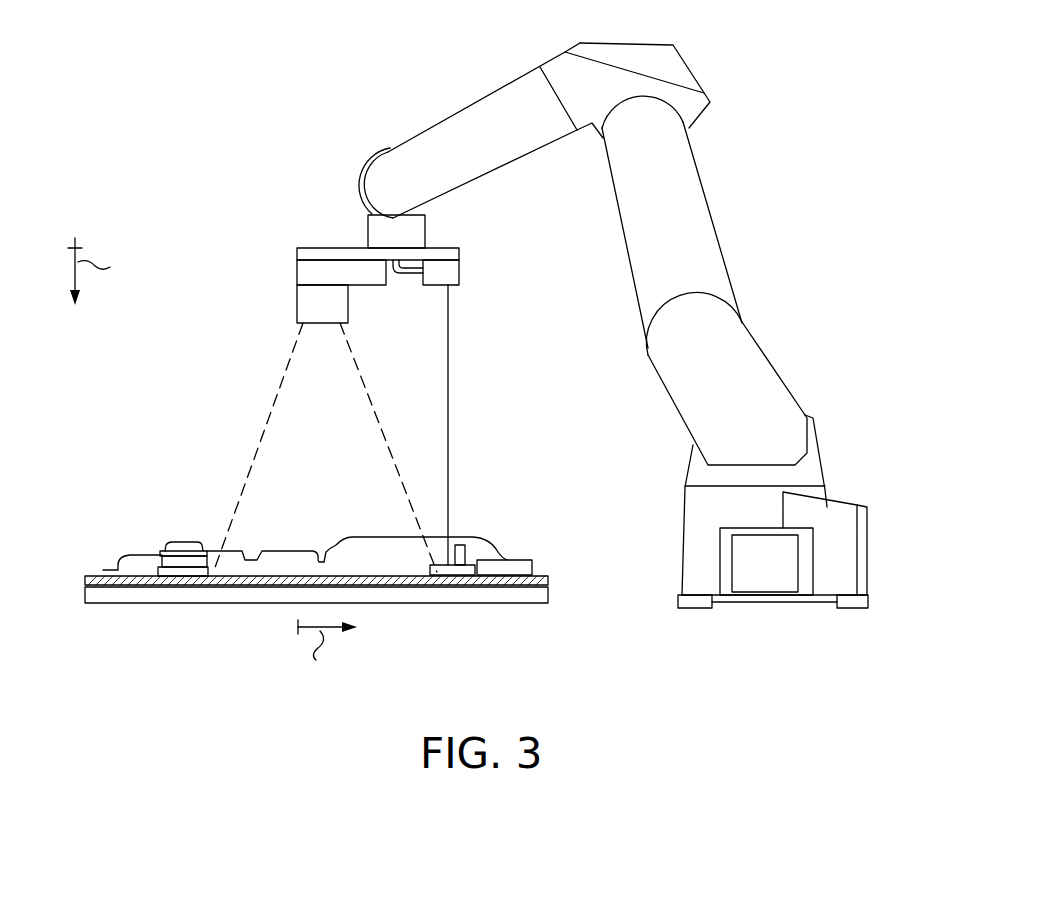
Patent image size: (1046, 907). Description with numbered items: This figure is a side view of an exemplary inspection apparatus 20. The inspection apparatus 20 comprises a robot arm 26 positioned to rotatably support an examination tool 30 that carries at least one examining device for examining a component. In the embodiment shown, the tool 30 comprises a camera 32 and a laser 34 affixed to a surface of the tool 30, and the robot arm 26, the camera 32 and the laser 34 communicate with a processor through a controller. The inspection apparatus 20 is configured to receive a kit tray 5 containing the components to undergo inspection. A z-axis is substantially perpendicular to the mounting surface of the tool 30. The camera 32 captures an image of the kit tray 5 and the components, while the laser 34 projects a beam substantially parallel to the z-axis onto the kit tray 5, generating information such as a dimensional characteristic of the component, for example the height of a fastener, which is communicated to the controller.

The inspection apparatus 20 is at (216, 96).
The robot arm 26 is at (688, 68).
The examination tool 30 is at (318, 247).
The camera 32 is at (297, 278).
The laser 34 is at (459, 270).
The kit tray 5 is at (90, 565).